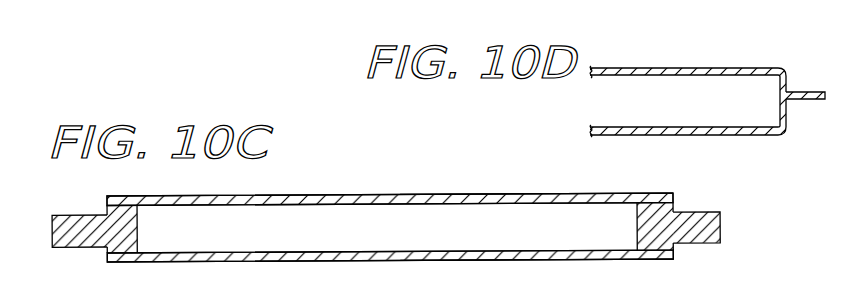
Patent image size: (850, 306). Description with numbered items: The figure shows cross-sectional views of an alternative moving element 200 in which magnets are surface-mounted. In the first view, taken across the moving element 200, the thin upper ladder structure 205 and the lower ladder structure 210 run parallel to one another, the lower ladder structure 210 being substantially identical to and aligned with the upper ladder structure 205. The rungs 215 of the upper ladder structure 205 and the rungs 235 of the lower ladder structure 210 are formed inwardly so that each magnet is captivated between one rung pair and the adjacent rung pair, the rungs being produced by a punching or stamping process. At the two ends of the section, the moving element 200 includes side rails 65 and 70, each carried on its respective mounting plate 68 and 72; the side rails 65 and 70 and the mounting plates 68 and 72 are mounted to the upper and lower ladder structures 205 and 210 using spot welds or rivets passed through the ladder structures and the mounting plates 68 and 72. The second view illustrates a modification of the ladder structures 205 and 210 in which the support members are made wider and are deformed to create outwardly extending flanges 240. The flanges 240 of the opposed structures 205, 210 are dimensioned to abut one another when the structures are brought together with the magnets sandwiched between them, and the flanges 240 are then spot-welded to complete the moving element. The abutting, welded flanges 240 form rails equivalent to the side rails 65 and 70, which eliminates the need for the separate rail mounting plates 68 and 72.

In FIG. 10C, the moving element 200 is at (419, 210).
In FIG. 10C, the upper ladder structure 205 is at (306, 195).
In FIG. 10D, the upper ladder structure 205 is at (712, 68).
In FIG. 10C, the lower ladder structure 210 is at (305, 262).
In FIG. 10D, the lower ladder structure 210 is at (700, 135).
In FIG. 10C, the rungs of upper ladder structure 215 is at (547, 193).
In FIG. 10C, the rungs of lower ladder structure 235 is at (545, 260).
In FIG. 10C, the side rail 65 is at (700, 232).
In FIG. 10C, the mounting plate 68 is at (655, 218).
In FIG. 10C, the side rail 70 is at (75, 232).
In FIG. 10C, the mounting plate 72 is at (125, 240).
In FIG. 10D, the outwardly extending flanges 240 is at (810, 92).